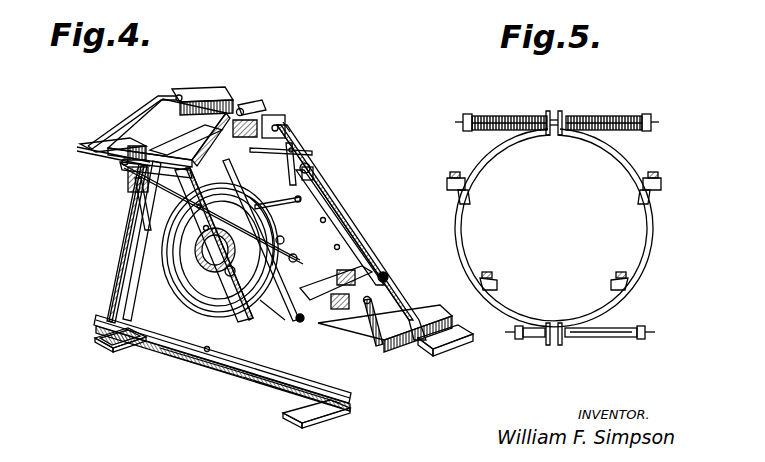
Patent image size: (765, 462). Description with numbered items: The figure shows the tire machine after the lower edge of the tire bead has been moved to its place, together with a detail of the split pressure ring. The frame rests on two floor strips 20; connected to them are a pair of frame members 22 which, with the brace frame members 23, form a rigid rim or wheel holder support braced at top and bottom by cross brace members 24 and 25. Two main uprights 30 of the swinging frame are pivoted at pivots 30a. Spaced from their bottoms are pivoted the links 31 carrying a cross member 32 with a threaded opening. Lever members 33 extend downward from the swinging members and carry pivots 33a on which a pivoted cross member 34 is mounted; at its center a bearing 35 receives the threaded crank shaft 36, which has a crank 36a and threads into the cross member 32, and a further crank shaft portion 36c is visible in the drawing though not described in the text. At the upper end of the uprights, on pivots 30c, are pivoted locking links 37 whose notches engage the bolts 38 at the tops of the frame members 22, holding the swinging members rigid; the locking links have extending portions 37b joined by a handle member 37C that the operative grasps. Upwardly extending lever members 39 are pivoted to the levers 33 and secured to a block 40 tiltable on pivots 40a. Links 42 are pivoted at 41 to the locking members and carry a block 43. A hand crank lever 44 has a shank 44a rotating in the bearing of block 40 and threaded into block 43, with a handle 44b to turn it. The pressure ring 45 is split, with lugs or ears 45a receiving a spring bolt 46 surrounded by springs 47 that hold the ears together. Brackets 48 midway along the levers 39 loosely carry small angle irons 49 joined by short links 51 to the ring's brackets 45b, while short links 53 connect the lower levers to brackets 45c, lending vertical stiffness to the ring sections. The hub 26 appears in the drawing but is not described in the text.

In FIG. 4, the floor strips 20 is at (100, 342).
In FIG. 4, the frame members 22 is at (150, 200).
In FIG. 4, the brace frame members 23 is at (118, 236).
In FIG. 4, the cross brace member 24 is at (172, 138).
In FIG. 4, the cross brace member 25 is at (262, 310).
In FIG. 4, the drum hub 26 is at (200, 262).
In FIG. 4, the main uprights of the swinging frame 30 is at (300, 383).
In FIG. 4, the pivots 30a is at (338, 414).
In FIG. 4, the pivots 30c is at (288, 122).
In FIG. 4, the links 31 is at (248, 378).
In FIG. 4, the cross member 32 is at (332, 283).
In FIG. 4, the lever members 33 is at (222, 370).
In FIG. 4, the pivots 33a is at (385, 272).
In FIG. 4, the pivoted cross member 34 is at (356, 310).
In FIG. 4, the bearing 35 is at (338, 282).
In FIG. 4, the threaded crank shaft 36 is at (378, 346).
In FIG. 4, the crank 36a is at (420, 314).
In FIG. 4, the lever plate edge 36c is at (432, 330).
In FIG. 4, the locking links 37 is at (130, 182).
In FIG. 4, the extending portions 37b is at (220, 92).
In FIG. 4, the handle member 37C is at (125, 122).
In FIG. 4, the bolts 38 is at (118, 166).
In FIG. 4, the lever members 39 is at (330, 236).
In FIG. 4, the block 40 is at (279, 114).
In FIG. 4, the pivots 40a is at (254, 104).
In FIG. 4, the pivot 41 is at (128, 172).
In FIG. 4, the links 42 is at (186, 140).
In FIG. 4, the block 43 is at (240, 108).
In FIG. 4, the hand crank lever 44 is at (318, 156).
In FIG. 4, the shank 44a is at (298, 142).
In FIG. 4, the handle 44b is at (316, 176).
In FIG. 4, the pressure ring 45 is at (186, 274).
In FIG. 5, the pressure ring 45 is at (490, 146).
In FIG. 5, the lugs or ears 45a is at (553, 112).
In FIG. 5, the brackets 45b is at (470, 192).
In FIG. 5, the brackets 45c is at (500, 286).
In FIG. 5, the spring bolt 46 is at (460, 124).
In FIG. 5, the springs 47 is at (520, 115).
In FIG. 4, the brackets 48 is at (303, 199).
In FIG. 5, the small angle irons 49 is at (457, 194).
In FIG. 4, the short links 51 is at (293, 230).
In FIG. 5, the short links 51 is at (450, 176).
In FIG. 4, the short links 53 is at (238, 280).
In FIG. 5, the short links 53 is at (492, 276).